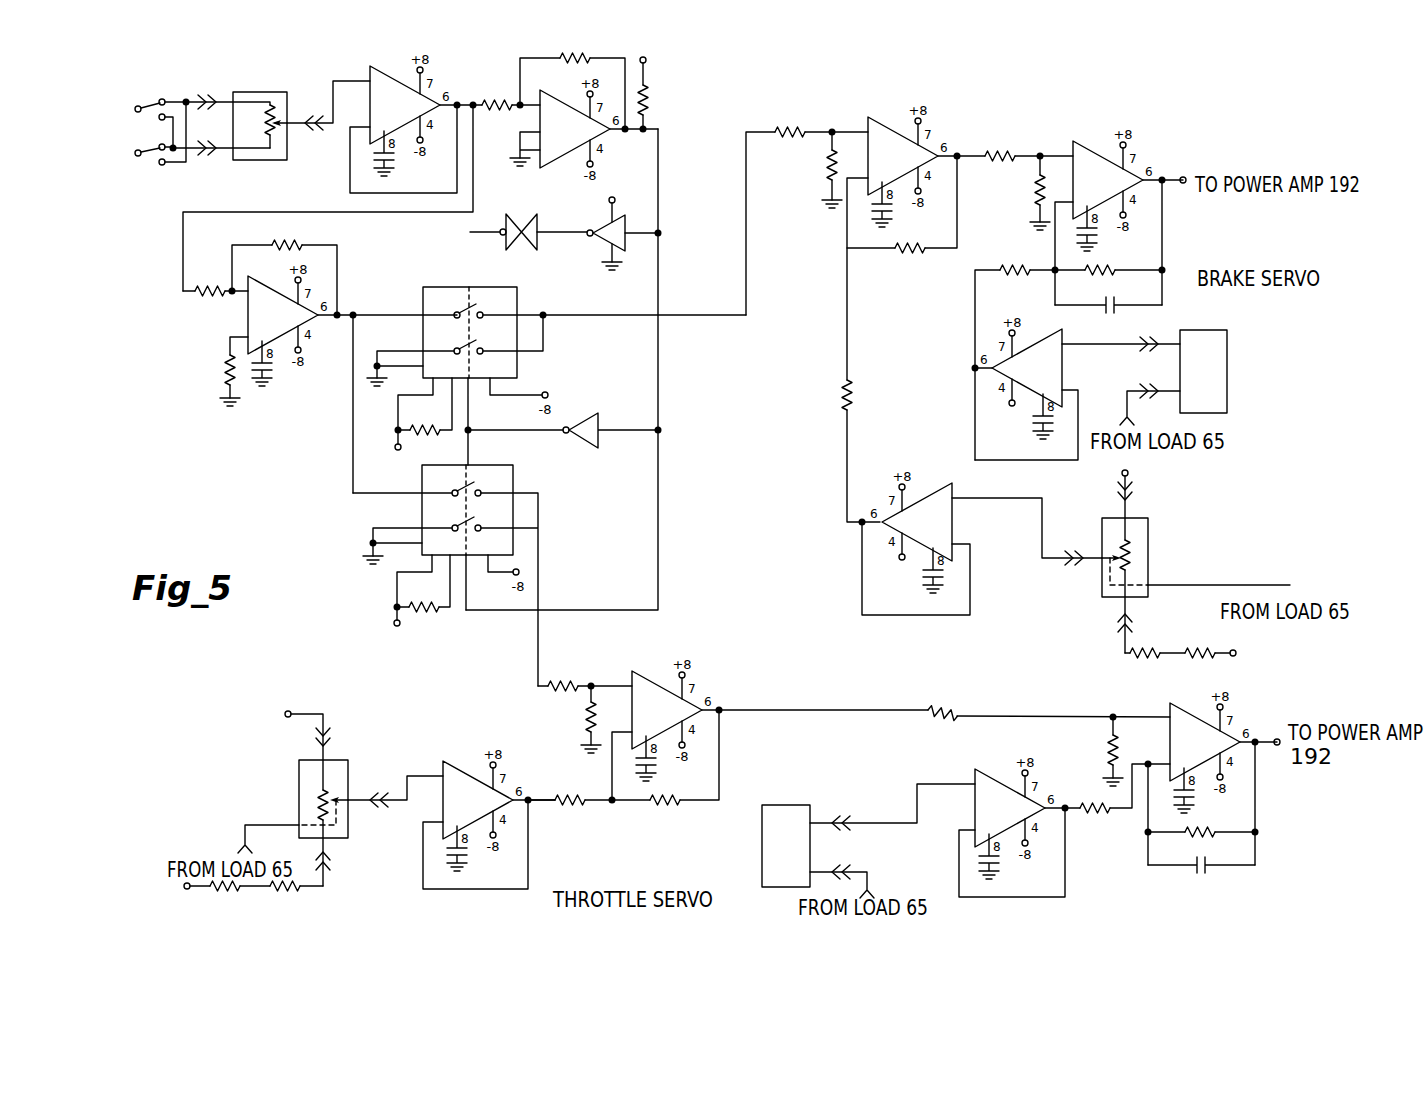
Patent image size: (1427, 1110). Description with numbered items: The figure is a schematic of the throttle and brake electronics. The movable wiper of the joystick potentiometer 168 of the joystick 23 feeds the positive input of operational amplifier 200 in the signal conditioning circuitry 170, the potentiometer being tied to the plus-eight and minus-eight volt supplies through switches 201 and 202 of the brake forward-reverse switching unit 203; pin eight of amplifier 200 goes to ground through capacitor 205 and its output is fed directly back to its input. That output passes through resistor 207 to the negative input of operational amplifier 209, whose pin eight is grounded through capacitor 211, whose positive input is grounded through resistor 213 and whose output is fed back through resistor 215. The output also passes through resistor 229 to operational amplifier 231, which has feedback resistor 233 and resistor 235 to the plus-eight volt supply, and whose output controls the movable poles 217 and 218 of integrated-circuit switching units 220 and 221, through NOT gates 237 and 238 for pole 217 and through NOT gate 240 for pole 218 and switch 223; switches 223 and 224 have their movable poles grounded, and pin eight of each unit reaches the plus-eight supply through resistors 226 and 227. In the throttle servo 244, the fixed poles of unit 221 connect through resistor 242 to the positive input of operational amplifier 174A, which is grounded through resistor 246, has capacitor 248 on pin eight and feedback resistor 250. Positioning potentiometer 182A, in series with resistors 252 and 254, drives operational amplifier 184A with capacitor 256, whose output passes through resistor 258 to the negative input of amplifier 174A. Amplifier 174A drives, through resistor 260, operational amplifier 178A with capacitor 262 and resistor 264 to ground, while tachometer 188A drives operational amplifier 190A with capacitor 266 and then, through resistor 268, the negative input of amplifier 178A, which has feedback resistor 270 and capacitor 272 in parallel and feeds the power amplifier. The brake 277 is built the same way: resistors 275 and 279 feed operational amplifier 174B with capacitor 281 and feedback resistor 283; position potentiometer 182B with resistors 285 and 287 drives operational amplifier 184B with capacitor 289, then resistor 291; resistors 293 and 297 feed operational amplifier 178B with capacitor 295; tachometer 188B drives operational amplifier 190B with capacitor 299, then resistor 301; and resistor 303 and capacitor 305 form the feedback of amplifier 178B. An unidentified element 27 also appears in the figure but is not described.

The switch 201 is at (138, 105).
The switch 202 is at (140, 150).
The brake forward-reverse switching unit 203 is at (147, 183).
The joystick potentiometer 168 is at (268, 102).
The joystick 23 is at (272, 162).
The operational amplifier 200 is at (403, 72).
The capacitor 205 is at (392, 162).
The signal conditioning circuitry 170 is at (490, 66).
The resistor 229 is at (498, 100).
The resistor 233 is at (574, 57).
The resistor 235 is at (648, 98).
The operational amplifier 231 is at (566, 162).
The NOT gate 238 is at (520, 216).
The NOT gate 237 is at (600, 226).
The brake servo control circuit 27 is at (732, 90).
The resistor 275 is at (800, 128).
The resistor 279 is at (828, 172).
The operational amplifier 174B is at (900, 128).
The capacitor 281 is at (892, 213).
The resistor 283 is at (898, 253).
The resistor 293 is at (1000, 150).
The resistor 297 is at (1035, 193).
The operational amplifier 178B is at (1096, 150).
The capacitor 295 is at (1096, 240).
The resistor 301 is at (1016, 268).
The resistor 303 is at (1104, 276).
The capacitor 305 is at (1108, 313).
The operational amplifier 190B is at (1040, 335).
The capacitor 299 is at (1032, 420).
The tachometer 188B is at (1227, 403).
The resistor 291 is at (851, 396).
The operational amplifier 184B is at (950, 468).
The capacitor 289 is at (924, 586).
The position potentiometer 182B is at (1128, 550).
The resistor 287 is at (1200, 655).
The resistor 285 is at (1145, 660).
The brake 277 is at (1006, 95).
The resistor 215 is at (292, 243).
The operational amplifier 209 is at (256, 284).
The resistor 207 is at (202, 298).
The resistor 213 is at (224, 362).
The capacitor 211 is at (272, 374).
The movable pole 217 is at (462, 306).
The switching unit 220 is at (487, 287).
The switch 223 is at (452, 341).
The resistor 226 is at (412, 428).
The NOT gate 240 is at (579, 416).
The movable pole 218 is at (460, 486).
The switching unit 221 is at (520, 478).
The switch 224 is at (452, 519).
The resistor 227 is at (400, 606).
The throttle servo 244 is at (455, 704).
The resistor 242 is at (560, 692).
The resistor 246 is at (586, 724).
The operational amplifier 174A is at (640, 686).
The capacitor 248 is at (655, 770).
The resistor 250 is at (670, 805).
The resistor 258 is at (568, 807).
The operational amplifier 184A is at (464, 762).
The capacitor 256 is at (467, 860).
The positioning potentiometer 182A is at (323, 793).
The resistor 254 is at (220, 891).
The resistor 252 is at (286, 890).
The tachometer 188A is at (795, 805).
The operational amplifier 190A is at (1000, 775).
The capacitor 266 is at (1000, 868).
The resistor 268 is at (1094, 816).
The resistor 260 is at (940, 710).
The resistor 264 is at (1108, 750).
The operational amplifier 178A is at (1240, 734).
The capacitor 262 is at (1196, 800).
The resistor 270 is at (1198, 838).
The capacitor 272 is at (1204, 875).